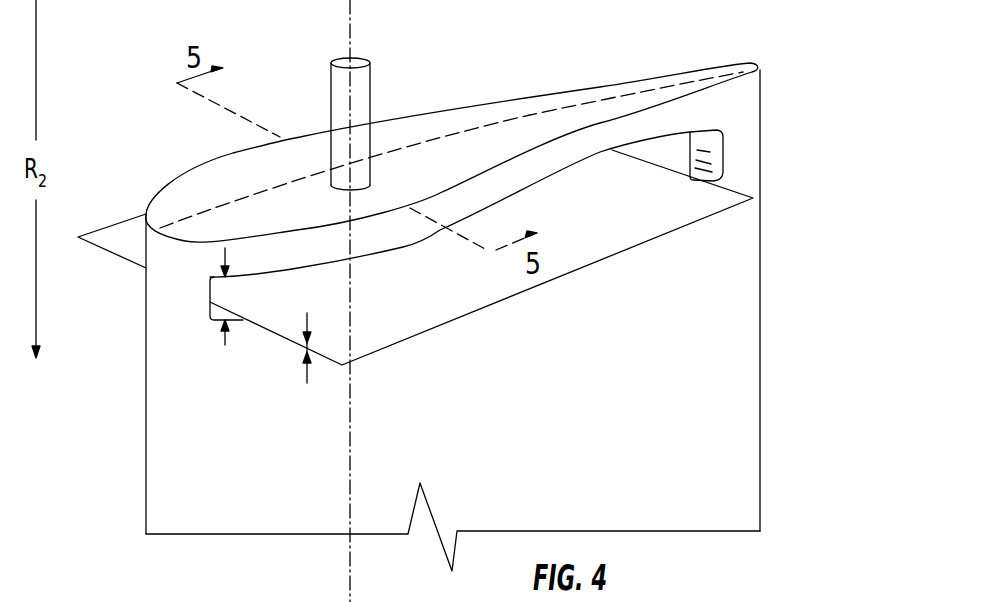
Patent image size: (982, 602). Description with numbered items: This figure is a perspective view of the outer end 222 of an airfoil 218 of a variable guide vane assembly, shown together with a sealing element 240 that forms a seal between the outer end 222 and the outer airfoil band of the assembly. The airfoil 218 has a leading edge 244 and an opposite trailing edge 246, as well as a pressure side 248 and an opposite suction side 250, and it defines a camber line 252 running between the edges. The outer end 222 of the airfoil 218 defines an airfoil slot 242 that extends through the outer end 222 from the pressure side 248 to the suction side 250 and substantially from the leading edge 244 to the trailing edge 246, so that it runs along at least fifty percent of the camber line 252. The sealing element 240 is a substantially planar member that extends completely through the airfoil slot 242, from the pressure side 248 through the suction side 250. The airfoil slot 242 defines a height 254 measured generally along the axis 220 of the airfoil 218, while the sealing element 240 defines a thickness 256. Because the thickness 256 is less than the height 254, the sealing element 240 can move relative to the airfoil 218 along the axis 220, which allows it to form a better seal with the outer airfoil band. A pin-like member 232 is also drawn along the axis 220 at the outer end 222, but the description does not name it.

The airfoil 218 is at (481, 301).
The axis 220 is at (352, 12).
The outer end 222 is at (467, 215).
The pin 232 is at (370, 97).
The sealing element 240 is at (667, 220).
The airfoil slot 242 is at (690, 195).
The leading edge 244 is at (456, 320).
The trailing edge 246 is at (773, 437).
The pressure side 248 is at (727, 373).
The suction side 250 is at (234, 150).
The camber line 252 is at (509, 124).
The height 254 is at (222, 334).
The thickness 256 is at (307, 370).